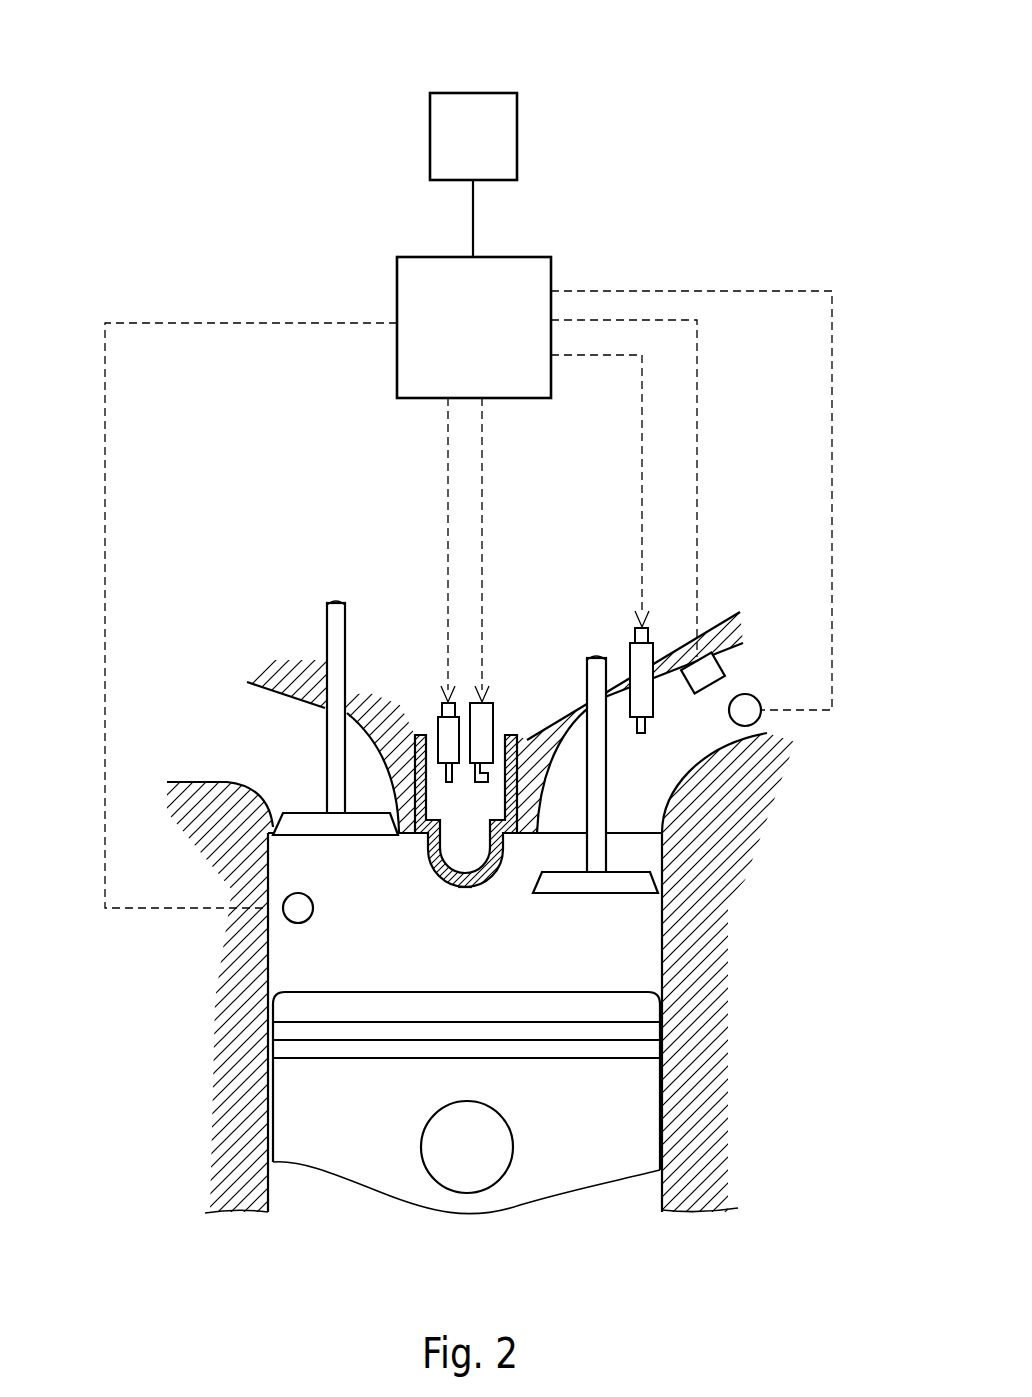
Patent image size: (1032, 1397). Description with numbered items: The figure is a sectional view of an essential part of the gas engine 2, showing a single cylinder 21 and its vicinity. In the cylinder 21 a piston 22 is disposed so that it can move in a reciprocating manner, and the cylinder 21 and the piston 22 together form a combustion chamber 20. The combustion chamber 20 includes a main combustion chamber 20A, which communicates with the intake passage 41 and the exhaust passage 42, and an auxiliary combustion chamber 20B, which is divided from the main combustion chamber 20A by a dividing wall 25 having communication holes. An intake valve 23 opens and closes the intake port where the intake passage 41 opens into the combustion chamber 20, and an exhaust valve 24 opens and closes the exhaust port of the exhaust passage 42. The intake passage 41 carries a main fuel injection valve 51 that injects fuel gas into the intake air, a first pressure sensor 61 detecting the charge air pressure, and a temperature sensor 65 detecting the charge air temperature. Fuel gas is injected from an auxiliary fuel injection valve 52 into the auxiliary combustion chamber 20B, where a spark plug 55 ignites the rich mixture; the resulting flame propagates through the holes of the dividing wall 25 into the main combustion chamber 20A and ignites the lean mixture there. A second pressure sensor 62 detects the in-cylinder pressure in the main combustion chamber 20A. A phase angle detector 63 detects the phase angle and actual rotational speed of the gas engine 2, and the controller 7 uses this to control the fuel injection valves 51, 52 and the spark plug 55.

The gas engine 2 is at (199, 1151).
The controller 7 is at (522, 267).
The combustion chamber 20 is at (580, 760).
The main combustion chamber 20A is at (630, 958).
The auxiliary combustion chamber 20B is at (413, 768).
The cylinder 21 is at (687, 1067).
The piston 22 is at (570, 1133).
The intake valve 23 is at (623, 895).
The exhaust valve 24 is at (303, 810).
The dividing wall 25 is at (462, 893).
The intake passage 41 is at (697, 738).
The exhaust passage 42 is at (275, 710).
The main fuel injection valve 51 is at (633, 664).
The auxiliary fuel injection valve 52 is at (445, 745).
The spark plug 55 is at (492, 708).
The first pressure sensor 61 is at (749, 697).
The second pressure sensor 62 is at (298, 913).
The phase angle detector 63 is at (473, 103).
The temperature sensor 65 is at (732, 650).